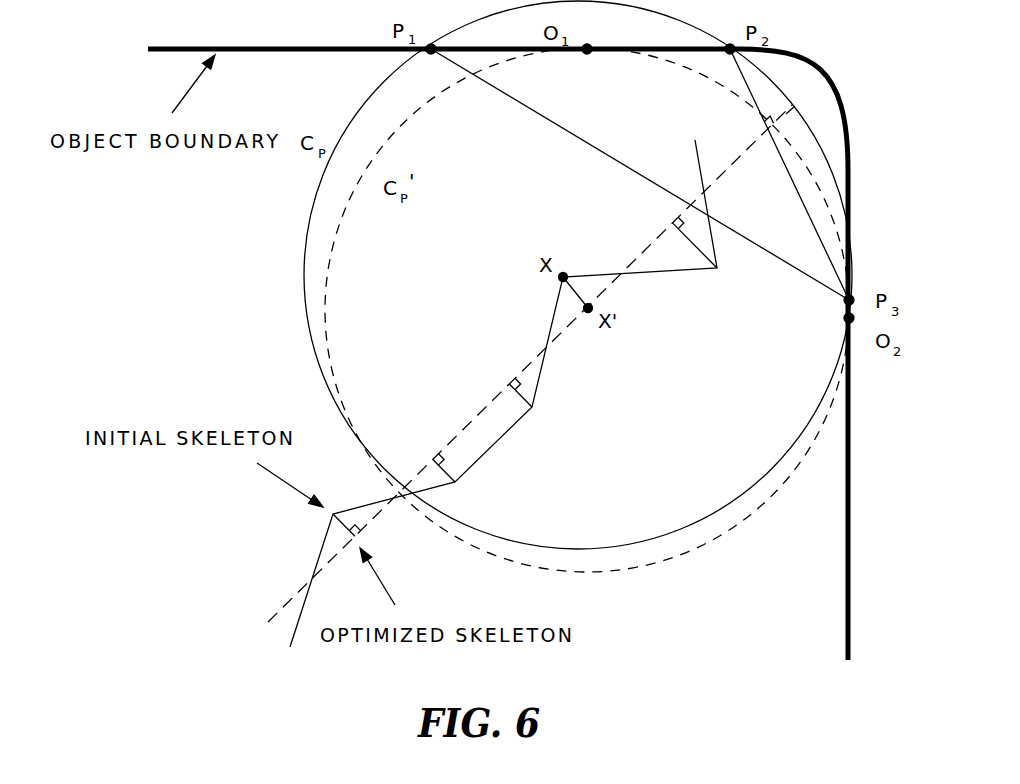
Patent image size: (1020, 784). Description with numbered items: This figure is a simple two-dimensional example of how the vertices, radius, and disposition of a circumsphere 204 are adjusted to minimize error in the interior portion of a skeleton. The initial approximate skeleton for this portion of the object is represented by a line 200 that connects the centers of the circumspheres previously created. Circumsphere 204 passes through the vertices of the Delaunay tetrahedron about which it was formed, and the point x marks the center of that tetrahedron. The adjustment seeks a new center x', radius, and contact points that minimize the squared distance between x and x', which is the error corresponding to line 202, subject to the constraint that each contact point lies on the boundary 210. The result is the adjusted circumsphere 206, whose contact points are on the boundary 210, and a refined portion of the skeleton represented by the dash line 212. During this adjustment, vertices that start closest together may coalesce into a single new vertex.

The line 200 is at (490, 447).
The line 202 is at (563, 297).
The circumsphere 204 is at (303, 235).
The adjusted circumsphere 206 is at (323, 297).
The boundary 210 is at (242, 46).
The dash line 212 is at (473, 420).